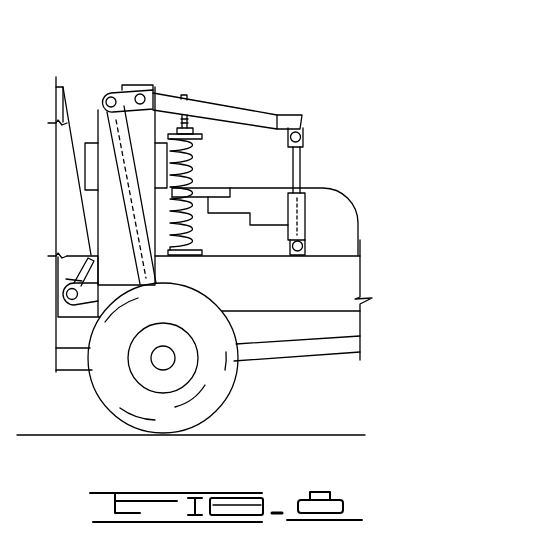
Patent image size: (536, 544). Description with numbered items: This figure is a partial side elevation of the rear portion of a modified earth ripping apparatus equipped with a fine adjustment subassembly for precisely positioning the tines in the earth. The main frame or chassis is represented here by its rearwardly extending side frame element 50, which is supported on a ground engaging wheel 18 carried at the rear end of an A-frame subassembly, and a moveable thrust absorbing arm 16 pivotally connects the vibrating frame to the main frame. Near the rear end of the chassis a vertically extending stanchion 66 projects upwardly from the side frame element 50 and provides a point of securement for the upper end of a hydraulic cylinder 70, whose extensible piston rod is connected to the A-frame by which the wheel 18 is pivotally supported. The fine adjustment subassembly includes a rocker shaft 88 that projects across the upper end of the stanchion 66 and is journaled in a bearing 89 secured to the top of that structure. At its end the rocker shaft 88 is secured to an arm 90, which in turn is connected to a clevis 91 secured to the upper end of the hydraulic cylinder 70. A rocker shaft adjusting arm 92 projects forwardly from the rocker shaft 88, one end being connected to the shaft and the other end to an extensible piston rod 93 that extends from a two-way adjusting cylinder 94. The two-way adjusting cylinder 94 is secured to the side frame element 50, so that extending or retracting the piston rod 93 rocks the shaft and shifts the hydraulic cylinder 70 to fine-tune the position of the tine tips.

The thrust absorbing arm 16 is at (240, 186).
The ground engaging wheel 18 is at (113, 397).
The side frame element 50 is at (336, 290).
The stanchion 66 is at (152, 135).
The hydraulic cylinder 70 is at (115, 158).
The rocker shaft 88 is at (156, 92).
The bearing 89 is at (148, 94).
The arm 90 is at (128, 88).
The clevis 91 is at (107, 99).
The rocker shaft adjusting arm 92 is at (228, 106).
The extensible piston rod 93 is at (300, 165).
The two-way adjusting cylinder 94 is at (298, 224).